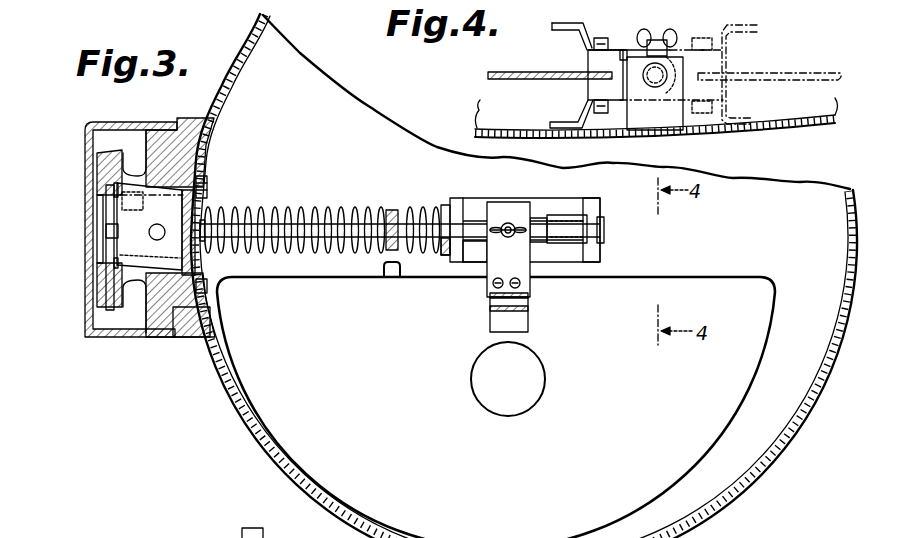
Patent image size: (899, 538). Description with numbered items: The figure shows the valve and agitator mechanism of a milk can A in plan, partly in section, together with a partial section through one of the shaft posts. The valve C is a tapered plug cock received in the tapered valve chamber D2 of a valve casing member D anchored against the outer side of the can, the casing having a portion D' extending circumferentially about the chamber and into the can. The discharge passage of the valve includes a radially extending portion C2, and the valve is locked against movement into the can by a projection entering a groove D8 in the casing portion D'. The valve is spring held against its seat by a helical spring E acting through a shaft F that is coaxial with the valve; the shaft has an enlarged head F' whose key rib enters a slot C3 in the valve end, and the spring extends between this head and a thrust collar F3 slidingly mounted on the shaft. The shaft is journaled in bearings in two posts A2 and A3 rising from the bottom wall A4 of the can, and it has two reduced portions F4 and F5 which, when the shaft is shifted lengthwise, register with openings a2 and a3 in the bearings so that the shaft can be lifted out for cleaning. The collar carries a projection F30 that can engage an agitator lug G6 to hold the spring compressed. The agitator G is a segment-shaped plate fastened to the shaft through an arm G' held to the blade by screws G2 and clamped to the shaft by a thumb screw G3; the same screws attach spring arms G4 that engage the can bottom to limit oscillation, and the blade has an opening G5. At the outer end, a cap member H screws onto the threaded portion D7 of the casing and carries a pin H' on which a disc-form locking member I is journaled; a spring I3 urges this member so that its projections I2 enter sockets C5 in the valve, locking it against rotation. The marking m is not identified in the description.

In FIG. 3, the milk can A is at (779, 448).
In FIG. 3, the post A2 is at (465, 200).
In FIG. 3, the post A3 is at (597, 202).
In FIG. 4, the post A3 is at (670, 118).
In FIG. 4, the bottom wall A4 is at (790, 130).
In FIG. 3, the opening a2 is at (470, 264).
In FIG. 3, the opening a3 is at (605, 230).
In FIG. 4, the opening a3 is at (627, 53).
In FIG. 3, the valve C is at (208, 195).
In FIG. 3, the radially extending portion C2 is at (182, 205).
In FIG. 3, the slot C3 is at (197, 262).
In FIG. 3, the socket C5 is at (138, 200).
In FIG. 3, the valve casing member D is at (179, 322).
In FIG. 3, the valve casing portion D' is at (225, 296).
In FIG. 3, the valve chamber D2 is at (169, 183).
In FIG. 3, the threaded portion D7 is at (190, 337).
In FIG. 3, the groove D8 is at (207, 183).
In FIG. 3, the helical spring E is at (343, 207).
In FIG. 3, the shaft F is at (400, 265).
In FIG. 4, the shaft F is at (697, 72).
In FIG. 3, the enlarged head F' is at (239, 209).
In FIG. 3, the thrust collar F3 is at (445, 205).
In FIG. 3, the reduced portion F4 is at (391, 210).
In FIG. 3, the reduced portion F5 is at (540, 224).
In FIG. 3, the projection F30 is at (442, 252).
In FIG. 3, the agitator G is at (496, 407).
In FIG. 4, the agitator G is at (664, 61).
In FIG. 3, the arm G' is at (531, 256).
In FIG. 4, the arm G' is at (637, 73).
In FIG. 3, the screws G2 is at (522, 302).
In FIG. 4, the screws G2 is at (600, 38).
In FIG. 3, the thumb screw G3 is at (510, 222).
In FIG. 4, the thumb screw G3 is at (676, 34).
In FIG. 3, the spring arms G4 is at (490, 322).
In FIG. 4, the spring arms G4 is at (552, 27).
In FIG. 3, the opening G5 is at (546, 381).
In FIG. 3, the agitator lug G6 is at (392, 278).
In FIG. 3, the cap member H is at (122, 216).
In FIG. 3, the pin H' is at (75, 233).
In FIG. 3, the locking member I is at (104, 200).
In FIG. 3, the projection I2 is at (110, 193).
In FIG. 3, the spring I3 is at (98, 215).
In FIG. 3, the wedge m is at (108, 165).